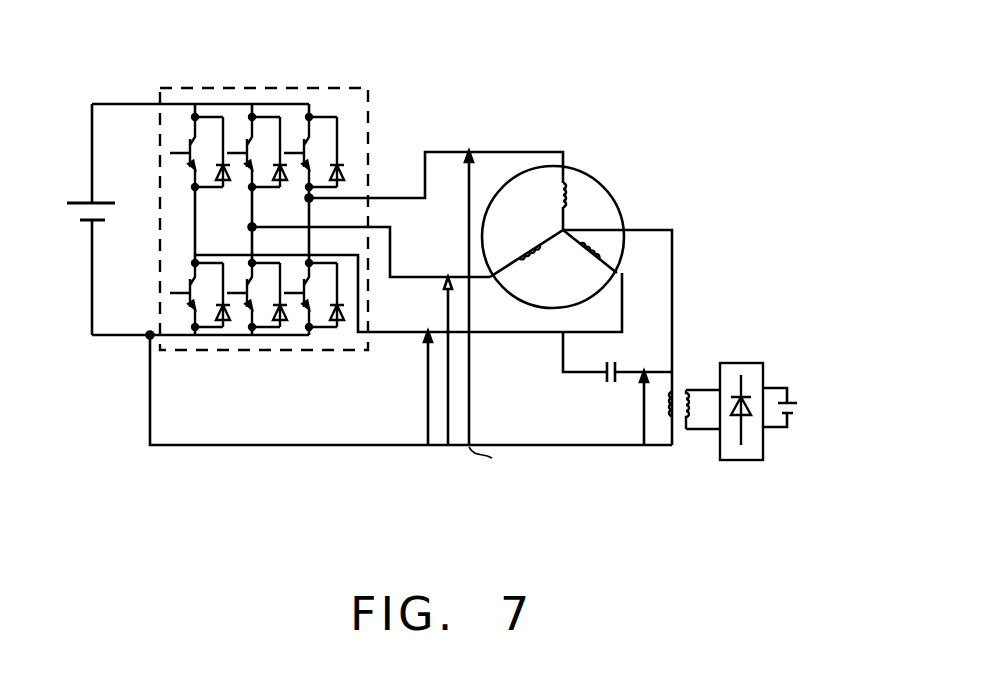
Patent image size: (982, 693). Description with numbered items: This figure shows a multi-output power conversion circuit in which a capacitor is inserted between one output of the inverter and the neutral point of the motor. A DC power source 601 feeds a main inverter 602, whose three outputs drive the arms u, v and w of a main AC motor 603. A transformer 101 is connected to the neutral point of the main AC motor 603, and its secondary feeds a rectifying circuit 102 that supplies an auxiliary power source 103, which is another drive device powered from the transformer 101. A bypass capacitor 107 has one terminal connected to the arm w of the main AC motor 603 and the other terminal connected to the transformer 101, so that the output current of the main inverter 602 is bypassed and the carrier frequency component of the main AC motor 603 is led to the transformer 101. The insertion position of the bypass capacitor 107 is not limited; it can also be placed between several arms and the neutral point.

The DC power source 601 is at (70, 220).
The main inverter 602 is at (250, 88).
The main AC motor 603 is at (598, 180).
The transformer 101 is at (683, 375).
The rectifying circuit 102 is at (762, 362).
The auxiliary power source 103 is at (793, 397).
The bypass capacitor 107 is at (610, 387).